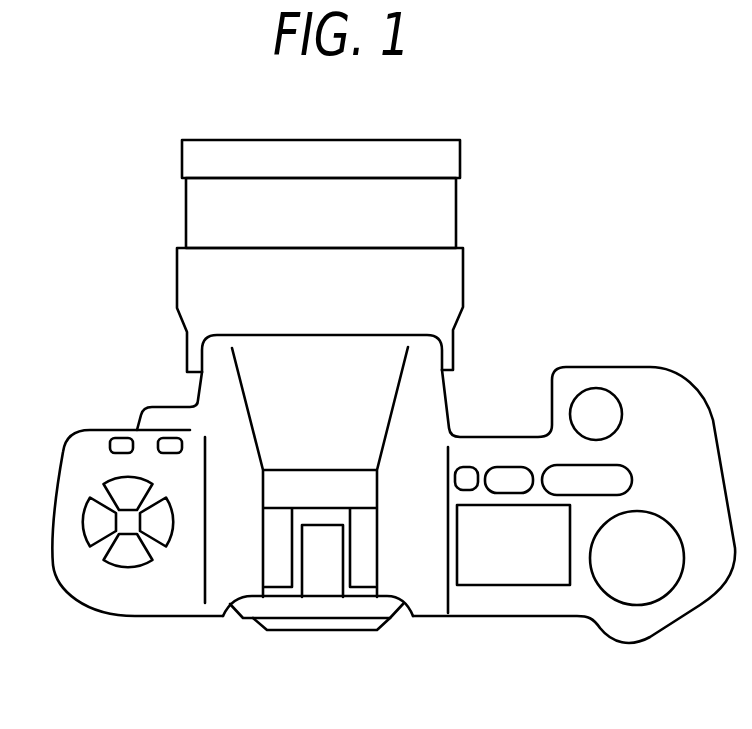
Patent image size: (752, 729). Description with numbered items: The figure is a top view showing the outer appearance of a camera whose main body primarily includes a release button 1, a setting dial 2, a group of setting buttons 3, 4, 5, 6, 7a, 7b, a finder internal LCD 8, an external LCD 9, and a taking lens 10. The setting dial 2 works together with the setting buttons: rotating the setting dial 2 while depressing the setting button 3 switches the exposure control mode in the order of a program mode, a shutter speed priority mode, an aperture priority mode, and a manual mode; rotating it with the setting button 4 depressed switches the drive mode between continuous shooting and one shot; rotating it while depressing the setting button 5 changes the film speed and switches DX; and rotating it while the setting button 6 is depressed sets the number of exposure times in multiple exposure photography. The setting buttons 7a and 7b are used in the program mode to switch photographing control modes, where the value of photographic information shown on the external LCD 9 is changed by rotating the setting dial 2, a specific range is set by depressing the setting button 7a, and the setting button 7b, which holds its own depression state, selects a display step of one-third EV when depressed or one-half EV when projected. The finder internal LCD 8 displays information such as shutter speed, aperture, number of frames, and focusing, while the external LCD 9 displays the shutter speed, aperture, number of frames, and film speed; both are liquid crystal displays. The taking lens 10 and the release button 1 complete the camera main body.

The release button 1 is at (605, 407).
The setting dial 2 is at (623, 588).
The setting button 3 is at (113, 485).
The setting button 4 is at (120, 555).
The setting button 5 is at (88, 522).
The setting button 6 is at (167, 522).
The setting button 7a is at (163, 440).
The setting button 7b is at (115, 440).
The finder internal LCD 8 is at (337, 623).
The external LCD 9 is at (502, 578).
The taking lens 10 is at (457, 220).